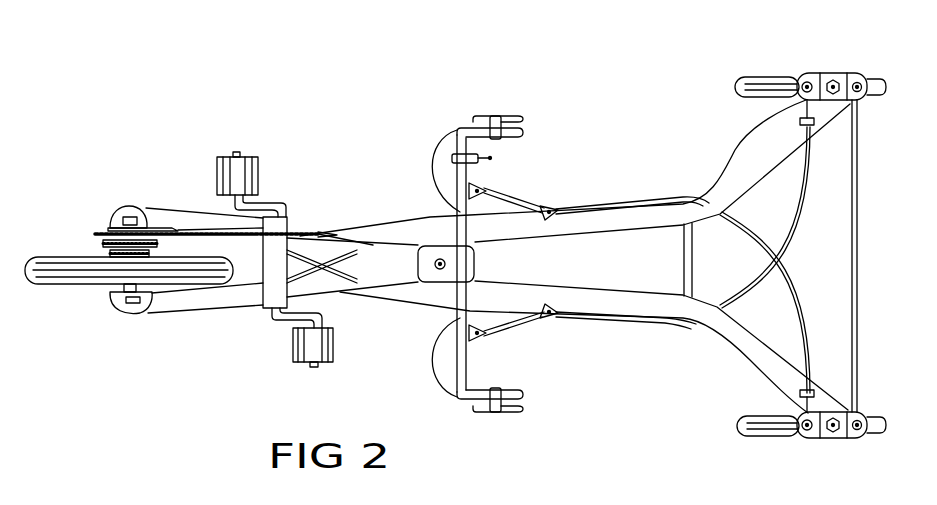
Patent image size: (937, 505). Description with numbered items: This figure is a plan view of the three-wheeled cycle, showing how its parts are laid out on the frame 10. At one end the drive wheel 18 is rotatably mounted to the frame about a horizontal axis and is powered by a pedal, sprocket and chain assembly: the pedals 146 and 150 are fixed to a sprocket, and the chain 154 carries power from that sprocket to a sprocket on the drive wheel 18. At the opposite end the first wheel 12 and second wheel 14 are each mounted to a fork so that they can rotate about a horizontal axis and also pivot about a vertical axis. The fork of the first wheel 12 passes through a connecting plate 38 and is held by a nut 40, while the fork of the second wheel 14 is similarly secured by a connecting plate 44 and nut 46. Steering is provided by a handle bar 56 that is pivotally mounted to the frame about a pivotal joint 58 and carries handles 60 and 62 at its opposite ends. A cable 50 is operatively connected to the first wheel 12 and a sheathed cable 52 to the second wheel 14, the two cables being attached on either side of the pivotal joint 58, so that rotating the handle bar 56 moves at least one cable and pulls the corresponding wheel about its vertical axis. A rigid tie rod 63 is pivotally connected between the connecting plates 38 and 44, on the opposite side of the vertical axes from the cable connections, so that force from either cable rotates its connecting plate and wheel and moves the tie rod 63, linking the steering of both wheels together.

The frame 10 is at (388, 291).
The first wheel 12 is at (745, 76).
The second wheel 14 is at (760, 437).
The drive wheel 18 is at (70, 285).
The connecting plate 38 is at (880, 33).
The nut 40 is at (830, 73).
The connecting plate 44 is at (887, 469).
The nut 46 is at (830, 439).
The cable 50 is at (652, 322).
The sheathed cable 52 is at (613, 197).
The handle bar 56 is at (443, 363).
The pivotal joint 58 is at (437, 255).
The handle 60 is at (526, 396).
The handle 62 is at (526, 130).
The tie rod 63 is at (858, 265).
The pedal 146 is at (243, 157).
The pedal 150 is at (293, 350).
The chain 154 is at (197, 229).